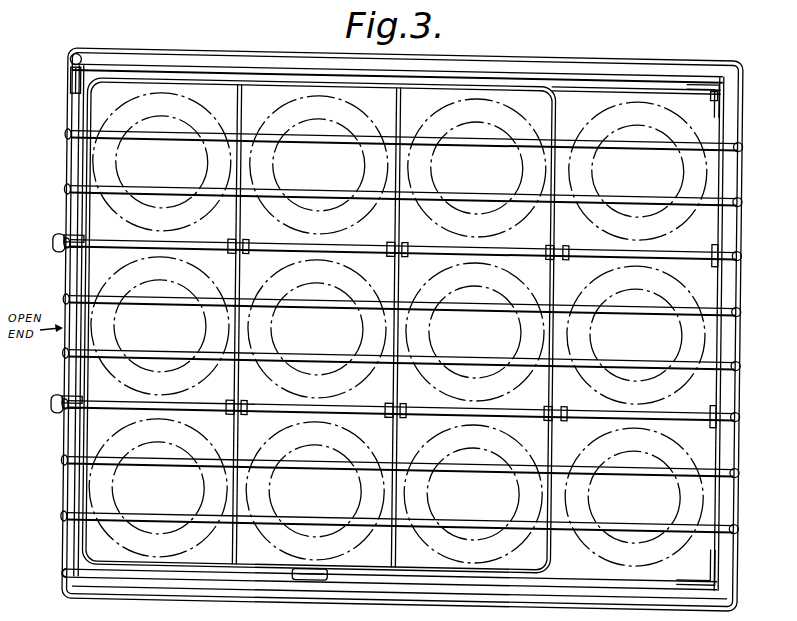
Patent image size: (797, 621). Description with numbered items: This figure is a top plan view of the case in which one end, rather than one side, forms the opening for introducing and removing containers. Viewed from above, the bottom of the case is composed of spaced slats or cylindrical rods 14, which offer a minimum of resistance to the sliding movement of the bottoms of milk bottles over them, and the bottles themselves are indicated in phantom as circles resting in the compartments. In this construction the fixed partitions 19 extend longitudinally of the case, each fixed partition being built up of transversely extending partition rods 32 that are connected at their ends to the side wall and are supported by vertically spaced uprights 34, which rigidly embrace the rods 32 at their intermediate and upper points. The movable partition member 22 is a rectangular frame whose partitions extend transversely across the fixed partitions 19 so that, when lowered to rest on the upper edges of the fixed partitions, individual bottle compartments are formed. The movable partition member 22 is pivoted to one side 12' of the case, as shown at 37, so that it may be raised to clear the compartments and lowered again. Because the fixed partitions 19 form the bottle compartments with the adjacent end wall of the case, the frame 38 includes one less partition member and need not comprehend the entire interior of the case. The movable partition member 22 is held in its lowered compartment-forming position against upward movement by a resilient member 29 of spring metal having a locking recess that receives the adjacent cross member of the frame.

The side 12' is at (402, 322).
The pivot 37 is at (73, 83).
The frame of the movable partition member 38 is at (558, 88).
The cylindrical rods 14 is at (310, 196).
The movable partition member 22 is at (390, 216).
The transversely extending partition rods 32 is at (512, 256).
The fixed partitions 19 is at (223, 229).
The uprights 34 is at (247, 246).
The resilient members 29 is at (289, 565).